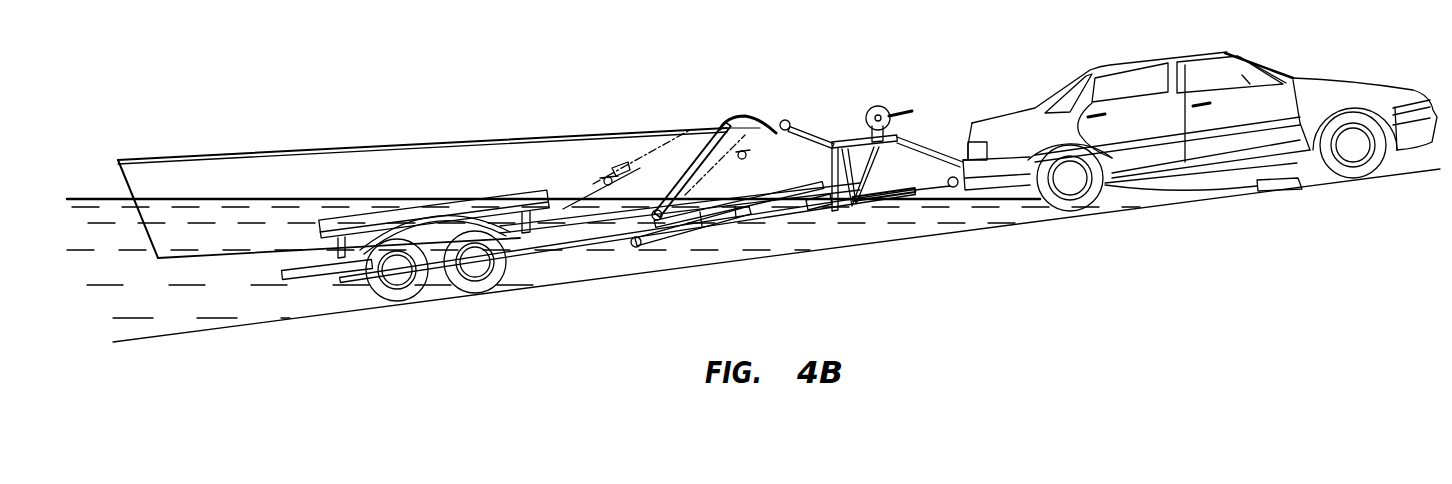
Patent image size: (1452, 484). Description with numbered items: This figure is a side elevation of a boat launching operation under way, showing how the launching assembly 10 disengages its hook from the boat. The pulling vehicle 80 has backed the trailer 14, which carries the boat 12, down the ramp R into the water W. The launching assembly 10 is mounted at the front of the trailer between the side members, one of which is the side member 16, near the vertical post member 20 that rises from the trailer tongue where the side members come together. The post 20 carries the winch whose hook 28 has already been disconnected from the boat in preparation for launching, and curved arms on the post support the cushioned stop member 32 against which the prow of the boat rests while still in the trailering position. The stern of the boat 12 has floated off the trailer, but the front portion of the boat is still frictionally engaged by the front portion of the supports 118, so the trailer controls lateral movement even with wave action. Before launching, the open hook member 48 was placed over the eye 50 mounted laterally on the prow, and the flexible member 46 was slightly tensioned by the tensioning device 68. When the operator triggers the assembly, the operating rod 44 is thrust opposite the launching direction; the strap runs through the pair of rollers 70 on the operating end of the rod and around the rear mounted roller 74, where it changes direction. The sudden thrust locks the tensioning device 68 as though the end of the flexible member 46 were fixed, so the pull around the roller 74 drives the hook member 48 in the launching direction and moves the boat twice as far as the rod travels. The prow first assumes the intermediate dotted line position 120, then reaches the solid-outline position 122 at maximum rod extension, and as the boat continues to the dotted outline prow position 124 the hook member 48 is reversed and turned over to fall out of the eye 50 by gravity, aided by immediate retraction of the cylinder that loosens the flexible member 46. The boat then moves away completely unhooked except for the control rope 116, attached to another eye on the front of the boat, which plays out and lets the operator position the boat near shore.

The launching assembly 10 is at (736, 242).
The boat 12 is at (312, 142).
The trailer 14 is at (521, 266).
The side member 16 is at (300, 282).
The vertical post member 20 is at (862, 172).
The hook 28 is at (883, 105).
The cushioned stop member 32 is at (790, 123).
The operating rod 44 is at (784, 176).
The flexible member 46 is at (783, 181).
The hook member 48 is at (604, 180).
The eye 50 is at (616, 166).
The tensioning device 68 is at (631, 245).
The rollers 70 is at (813, 208).
The rear mounted roller 74 is at (574, 251).
The pulling vehicle 80 is at (1366, 72).
The control rope 116 is at (1278, 191).
The supports 118 is at (500, 195).
The intermediate dotted line position 120 is at (767, 122).
The prow position 122 is at (707, 130).
The dotted outline prow position 124 is at (643, 143).
The ramp R is at (181, 342).
The water W is at (112, 196).